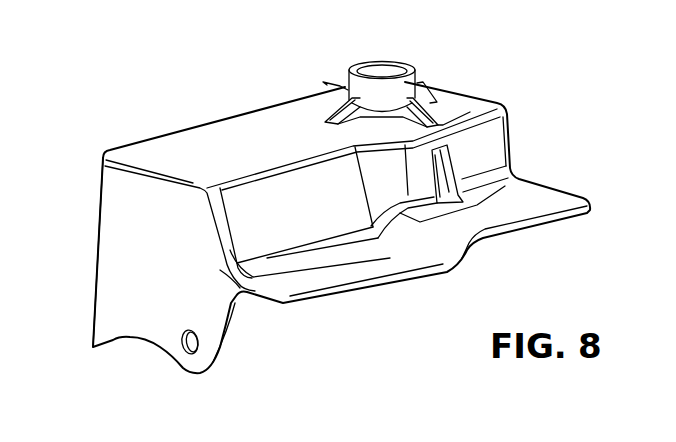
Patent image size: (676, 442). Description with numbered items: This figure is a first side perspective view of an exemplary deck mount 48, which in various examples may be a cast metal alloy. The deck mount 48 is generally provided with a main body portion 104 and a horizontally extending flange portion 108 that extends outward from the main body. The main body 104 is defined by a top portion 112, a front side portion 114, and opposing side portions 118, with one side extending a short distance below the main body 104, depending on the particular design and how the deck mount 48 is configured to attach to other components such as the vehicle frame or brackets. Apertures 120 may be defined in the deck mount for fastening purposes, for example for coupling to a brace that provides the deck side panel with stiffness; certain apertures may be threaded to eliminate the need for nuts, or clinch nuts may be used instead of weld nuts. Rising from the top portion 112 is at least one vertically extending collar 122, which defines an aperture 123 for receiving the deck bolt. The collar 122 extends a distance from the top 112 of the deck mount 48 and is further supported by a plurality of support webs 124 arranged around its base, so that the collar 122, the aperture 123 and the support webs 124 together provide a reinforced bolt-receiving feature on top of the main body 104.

The deck mount 48 is at (604, 159).
The main body portion 104 is at (516, 152).
The horizontally extending flange portion 108 is at (363, 260).
The top portion 112 is at (213, 138).
The front side portion 114 is at (280, 237).
The opposing side portions 118 is at (107, 258).
The apertures 120 is at (183, 343).
The vertically extending collar 122 is at (420, 88).
The aperture 123 is at (388, 70).
The support webs 124 is at (332, 97).